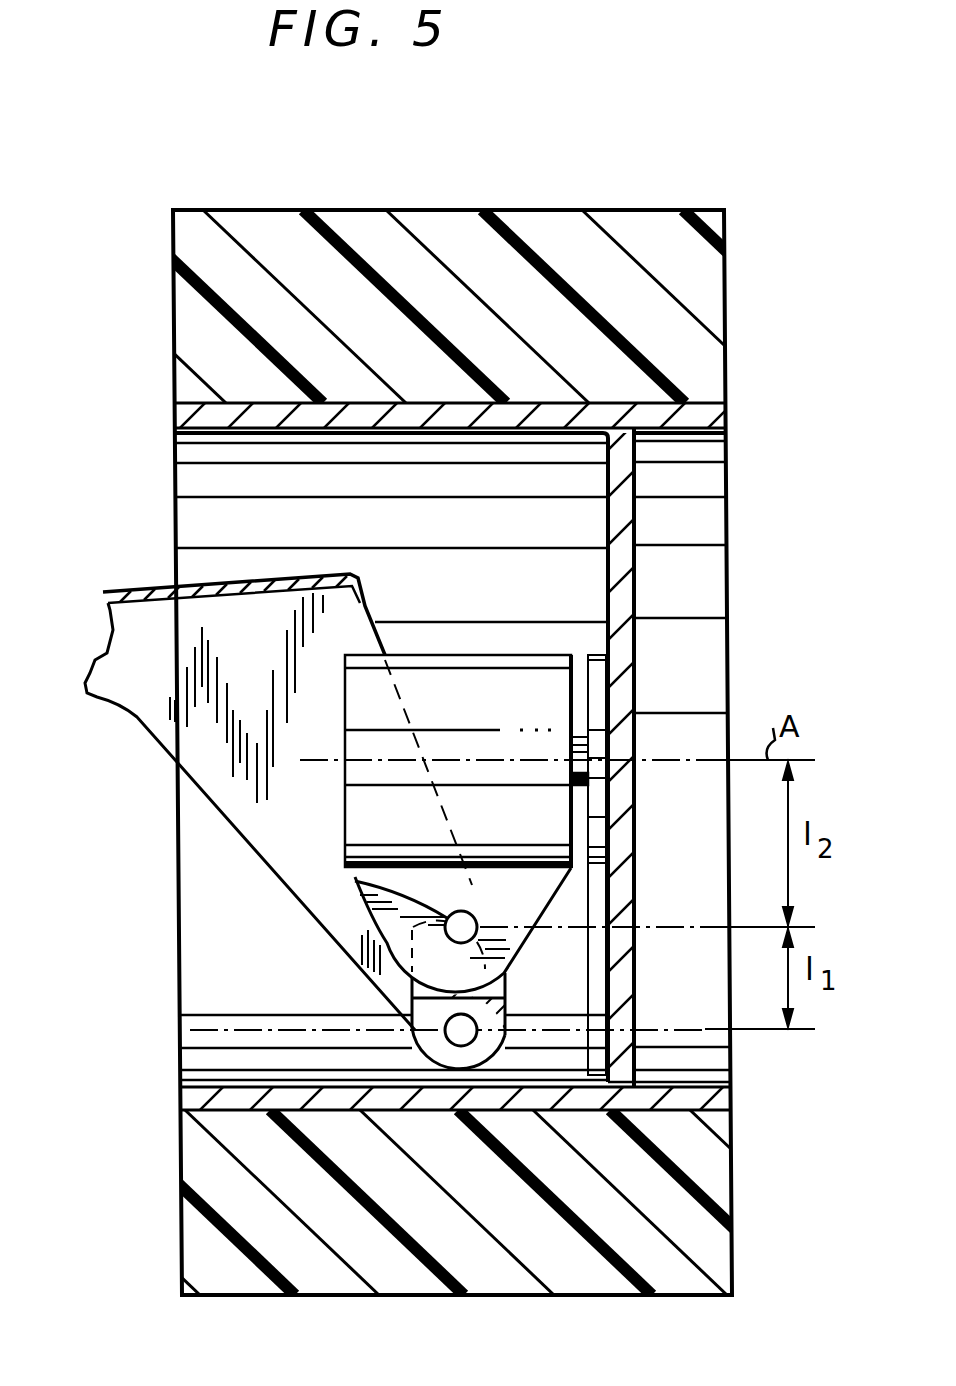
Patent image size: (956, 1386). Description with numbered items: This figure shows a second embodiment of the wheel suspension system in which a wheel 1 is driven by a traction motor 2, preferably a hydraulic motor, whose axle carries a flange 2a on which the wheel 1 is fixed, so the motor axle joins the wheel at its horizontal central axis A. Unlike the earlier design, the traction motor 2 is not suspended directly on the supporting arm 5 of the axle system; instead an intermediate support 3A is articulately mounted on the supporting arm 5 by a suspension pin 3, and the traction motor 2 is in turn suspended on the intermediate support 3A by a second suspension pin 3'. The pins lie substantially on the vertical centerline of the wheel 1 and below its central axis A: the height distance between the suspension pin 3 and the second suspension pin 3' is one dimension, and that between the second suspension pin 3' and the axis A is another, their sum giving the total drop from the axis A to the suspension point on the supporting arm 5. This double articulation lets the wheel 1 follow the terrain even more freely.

The wheel 1 is at (560, 220).
The traction motor 2 is at (490, 683).
The flange 2a is at (600, 660).
The suspension pin 3 is at (443, 965).
The second suspension pin 3' is at (372, 889).
The intermediate support 3A is at (510, 1000).
The supporting arm 5 is at (152, 707).